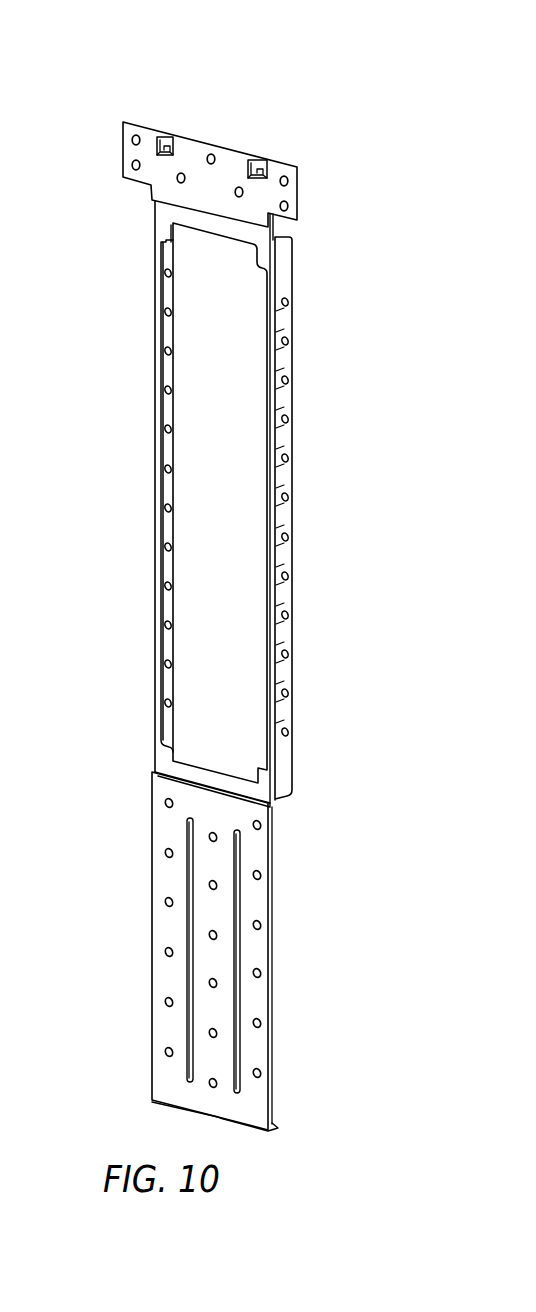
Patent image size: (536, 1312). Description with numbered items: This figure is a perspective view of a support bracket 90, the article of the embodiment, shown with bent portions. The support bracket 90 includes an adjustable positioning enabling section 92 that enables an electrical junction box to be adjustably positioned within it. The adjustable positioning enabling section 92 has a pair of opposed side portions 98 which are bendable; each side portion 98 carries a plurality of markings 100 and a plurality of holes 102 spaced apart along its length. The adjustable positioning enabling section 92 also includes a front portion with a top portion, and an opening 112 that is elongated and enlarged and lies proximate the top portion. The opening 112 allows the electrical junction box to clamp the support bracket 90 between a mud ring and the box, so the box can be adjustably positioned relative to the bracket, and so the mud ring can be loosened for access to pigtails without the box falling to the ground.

The support bracket 90 is at (218, 172).
The adjustable positioning enabling section 92 is at (322, 507).
The side portion 98 is at (282, 753).
The markings 100 is at (288, 482).
The holes 102 is at (288, 422).
The opening 112 is at (222, 602).